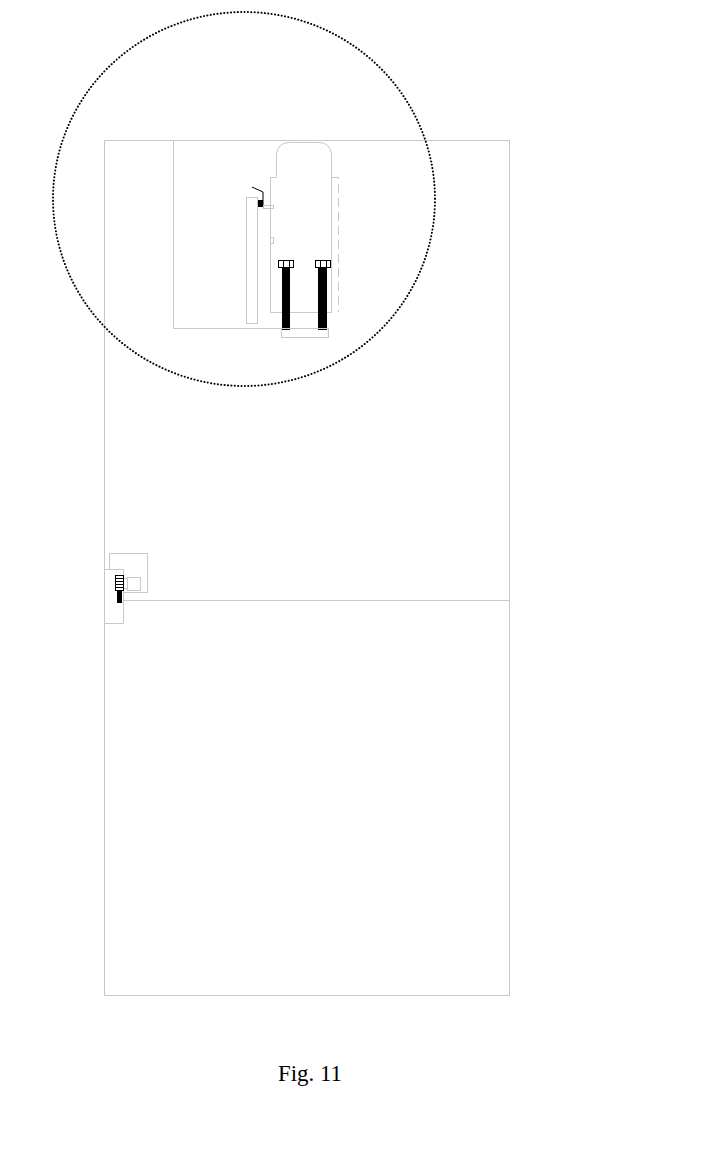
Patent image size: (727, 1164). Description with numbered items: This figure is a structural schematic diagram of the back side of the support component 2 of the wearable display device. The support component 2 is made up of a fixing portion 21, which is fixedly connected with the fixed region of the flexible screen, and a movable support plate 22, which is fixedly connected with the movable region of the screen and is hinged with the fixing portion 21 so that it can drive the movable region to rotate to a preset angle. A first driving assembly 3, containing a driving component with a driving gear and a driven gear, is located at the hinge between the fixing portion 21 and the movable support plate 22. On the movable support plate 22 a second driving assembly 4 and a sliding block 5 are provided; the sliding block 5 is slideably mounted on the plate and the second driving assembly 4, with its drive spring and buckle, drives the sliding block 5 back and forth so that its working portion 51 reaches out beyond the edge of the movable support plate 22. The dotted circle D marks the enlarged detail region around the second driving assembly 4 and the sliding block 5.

The support component 2 is at (367, 568).
The fixing portion 21 is at (432, 717).
The movable support plate 22 is at (487, 496).
The first driving assembly 3 is at (118, 595).
The second driving assembly 4 is at (258, 239).
The sliding block 5 is at (315, 219).
The working portion 51 is at (314, 162).
The enlarged detail region D is at (351, 50).